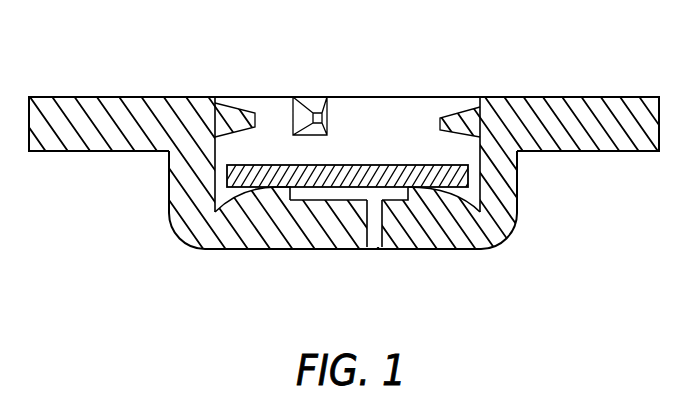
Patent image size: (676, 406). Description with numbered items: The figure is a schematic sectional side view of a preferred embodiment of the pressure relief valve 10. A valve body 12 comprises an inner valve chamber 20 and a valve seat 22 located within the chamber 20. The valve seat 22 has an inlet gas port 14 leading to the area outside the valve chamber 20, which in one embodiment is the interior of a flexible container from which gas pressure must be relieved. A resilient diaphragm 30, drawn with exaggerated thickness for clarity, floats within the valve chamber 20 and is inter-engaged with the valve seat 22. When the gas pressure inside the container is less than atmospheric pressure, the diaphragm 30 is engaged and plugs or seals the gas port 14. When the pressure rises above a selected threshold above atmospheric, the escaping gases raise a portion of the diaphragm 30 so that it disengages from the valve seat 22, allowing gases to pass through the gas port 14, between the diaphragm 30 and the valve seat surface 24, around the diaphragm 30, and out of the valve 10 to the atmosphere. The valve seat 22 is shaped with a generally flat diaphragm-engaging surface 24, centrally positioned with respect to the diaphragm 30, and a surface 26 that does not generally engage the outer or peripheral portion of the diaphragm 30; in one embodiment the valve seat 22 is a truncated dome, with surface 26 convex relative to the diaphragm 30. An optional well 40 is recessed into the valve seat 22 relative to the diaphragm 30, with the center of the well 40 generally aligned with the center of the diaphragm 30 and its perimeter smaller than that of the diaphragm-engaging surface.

The pressure relief valve 10 is at (338, 179).
The valve body 12 is at (548, 98).
The inlet gas port 14 is at (383, 218).
The inner valve chamber 20 is at (370, 97).
The valve seat 22 is at (481, 208).
The diaphragm-engaging surface 24 is at (279, 190).
The surface 26 is at (255, 193).
The resilient diaphragm 30 is at (278, 164).
The well 40 is at (336, 201).